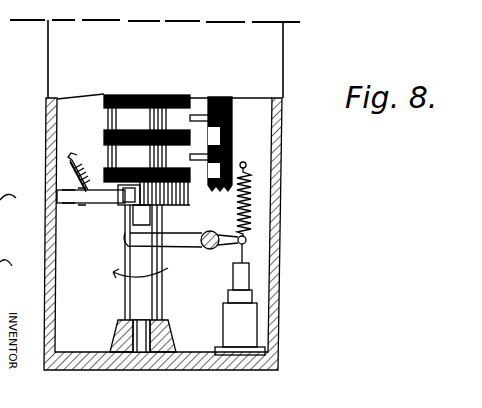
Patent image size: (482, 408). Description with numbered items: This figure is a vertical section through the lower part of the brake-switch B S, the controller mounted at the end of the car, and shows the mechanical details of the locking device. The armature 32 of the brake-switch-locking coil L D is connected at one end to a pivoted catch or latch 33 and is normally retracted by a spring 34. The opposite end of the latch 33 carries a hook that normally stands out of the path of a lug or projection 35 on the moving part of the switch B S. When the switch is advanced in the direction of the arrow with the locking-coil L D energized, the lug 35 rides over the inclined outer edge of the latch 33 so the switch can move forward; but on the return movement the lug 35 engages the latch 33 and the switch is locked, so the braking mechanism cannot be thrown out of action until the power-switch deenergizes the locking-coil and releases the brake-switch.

The armature 32 is at (247, 268).
The pivoted catch or latch 33 is at (165, 233).
The spring 34 is at (258, 162).
The lug or projection 35 is at (155, 212).
The brake-switch-locking coil LD is at (233, 319).
The brake-switch BS is at (210, 65).